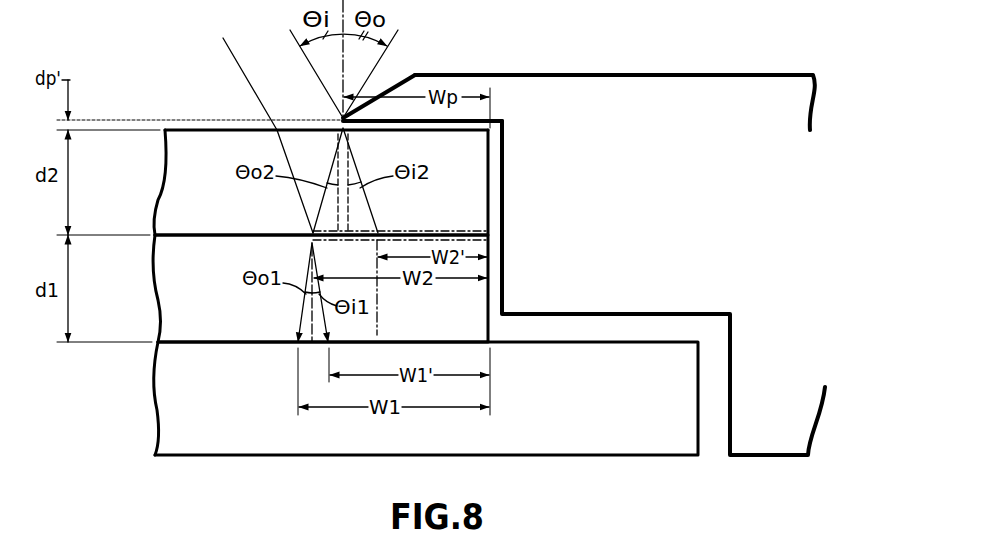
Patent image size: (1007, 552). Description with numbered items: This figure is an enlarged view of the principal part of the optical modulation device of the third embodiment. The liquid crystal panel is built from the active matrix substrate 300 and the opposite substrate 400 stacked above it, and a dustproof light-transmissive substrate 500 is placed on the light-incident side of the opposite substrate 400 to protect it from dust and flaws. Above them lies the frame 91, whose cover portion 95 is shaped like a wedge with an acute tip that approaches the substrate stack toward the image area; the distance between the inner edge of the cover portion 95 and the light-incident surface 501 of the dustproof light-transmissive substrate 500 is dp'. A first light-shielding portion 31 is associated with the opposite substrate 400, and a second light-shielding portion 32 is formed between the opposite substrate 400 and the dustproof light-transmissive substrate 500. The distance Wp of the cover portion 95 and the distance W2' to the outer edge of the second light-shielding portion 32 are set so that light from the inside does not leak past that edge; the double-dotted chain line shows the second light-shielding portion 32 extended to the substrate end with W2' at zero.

The frame 91 is at (737, 82).
The cover portion 95 is at (399, 83).
The dustproof light-transmissive substrate 500 is at (173, 170).
The light-incident surface of the dustproof light-transmissive substrate 501 is at (301, 128).
The opposite substrate 400 is at (170, 307).
The active matrix substrate 300 is at (160, 413).
The first light-shielding portion 31 is at (306, 335).
The second light-shielding portion 32 is at (358, 232).